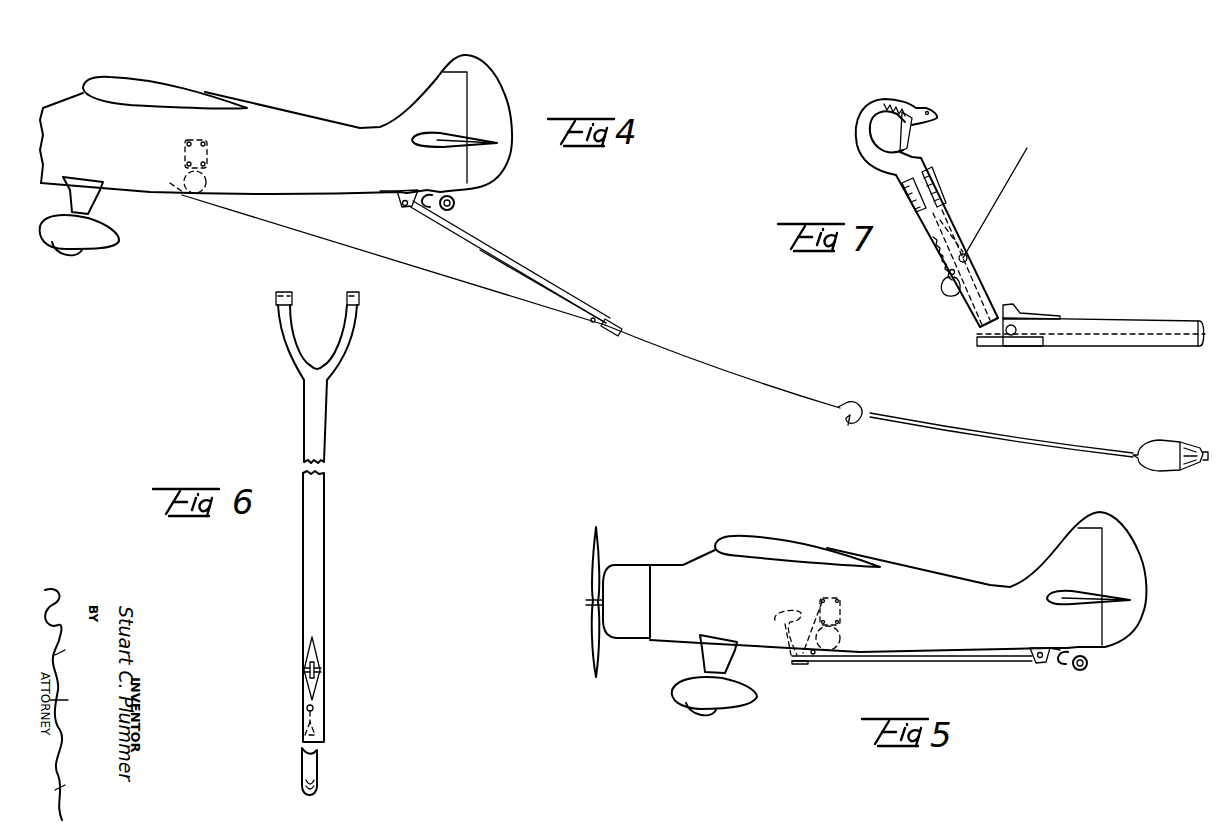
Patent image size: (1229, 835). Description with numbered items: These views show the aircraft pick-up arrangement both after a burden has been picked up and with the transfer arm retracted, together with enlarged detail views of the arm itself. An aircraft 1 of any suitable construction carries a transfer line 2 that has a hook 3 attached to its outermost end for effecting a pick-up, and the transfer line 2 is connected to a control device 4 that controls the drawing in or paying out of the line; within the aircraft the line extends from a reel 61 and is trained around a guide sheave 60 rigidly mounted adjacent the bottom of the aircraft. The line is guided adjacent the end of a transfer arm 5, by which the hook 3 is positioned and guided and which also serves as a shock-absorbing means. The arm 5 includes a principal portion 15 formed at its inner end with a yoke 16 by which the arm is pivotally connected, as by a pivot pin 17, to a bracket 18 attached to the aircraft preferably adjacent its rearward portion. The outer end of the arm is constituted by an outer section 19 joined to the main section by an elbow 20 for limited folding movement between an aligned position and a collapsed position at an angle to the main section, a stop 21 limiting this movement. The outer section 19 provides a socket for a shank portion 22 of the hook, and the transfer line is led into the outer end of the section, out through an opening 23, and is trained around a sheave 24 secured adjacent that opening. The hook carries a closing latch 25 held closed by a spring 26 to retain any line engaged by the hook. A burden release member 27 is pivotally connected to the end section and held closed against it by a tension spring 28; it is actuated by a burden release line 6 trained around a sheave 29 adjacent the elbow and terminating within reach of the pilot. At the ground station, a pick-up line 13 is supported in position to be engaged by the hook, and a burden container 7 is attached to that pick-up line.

In FIG. 4, the aircraft 1 is at (283, 110).
In FIG. 5, the aircraft 1 is at (915, 567).
In FIG. 4, the transfer line 2 is at (345, 252).
In FIG. 6, the transfer line 2 is at (332, 685).
In FIG. 4, the hook 3 is at (860, 404).
In FIG. 7, the hook 3 is at (840, 127).
In FIG. 6, the hook 3 is at (318, 771).
In FIG. 5, the hook 3 is at (773, 613).
In FIG. 4, the control device 4 is at (207, 152).
In FIG. 5, the control device 4 is at (840, 613).
In FIG. 4, the transfer arm 5 is at (510, 250).
In FIG. 6, the transfer arm 5 is at (343, 436).
In FIG. 5, the transfer arm 5 is at (935, 663).
In FIG. 7, the burden release line 6 is at (1103, 333).
In FIG. 4, the burden container 7 is at (1160, 442).
In FIG. 4, the pick-up line 13 is at (1000, 434).
In FIG. 4, the principal portion 15 is at (540, 278).
In FIG. 7, the principal portion 15 is at (1172, 320).
In FIG. 6, the principal portion 15 is at (315, 512).
In FIG. 6, the yoke 16 is at (350, 332).
In FIG. 4, the pivot pin 17 is at (400, 206).
In FIG. 5, the pivot pin 17 is at (1042, 664).
In FIG. 4, the bracket 18 is at (398, 198).
In FIG. 5, the bracket 18 is at (1052, 656).
In FIG. 4, the outer section 19 is at (622, 322).
In FIG. 7, the outer section 19 is at (912, 206).
In FIG. 7, the elbow 20 is at (1017, 312).
In FIG. 6, the elbow 20 is at (321, 664).
In FIG. 7, the stop 21 is at (945, 218).
In FIG. 7, the shank portion 22 is at (932, 176).
In FIG. 6, the shank portion 22 is at (315, 733).
In FIG. 7, the opening 23 is at (968, 258).
In FIG. 6, the opening 23 is at (307, 708).
In FIG. 7, the sheave 24 is at (960, 240).
In FIG. 7, the closing latch 25 is at (920, 126).
In FIG. 7, the spring 26 is at (900, 102).
In FIG. 4, the burden release member 27 is at (600, 318).
In FIG. 7, the burden release member 27 is at (945, 295).
In FIG. 7, the tension spring 28 is at (940, 256).
In FIG. 7, the sheave 29 is at (1015, 345).
In FIG. 4, the guide sheave 60 is at (166, 182).
In FIG. 4, the reel 61 is at (207, 183).